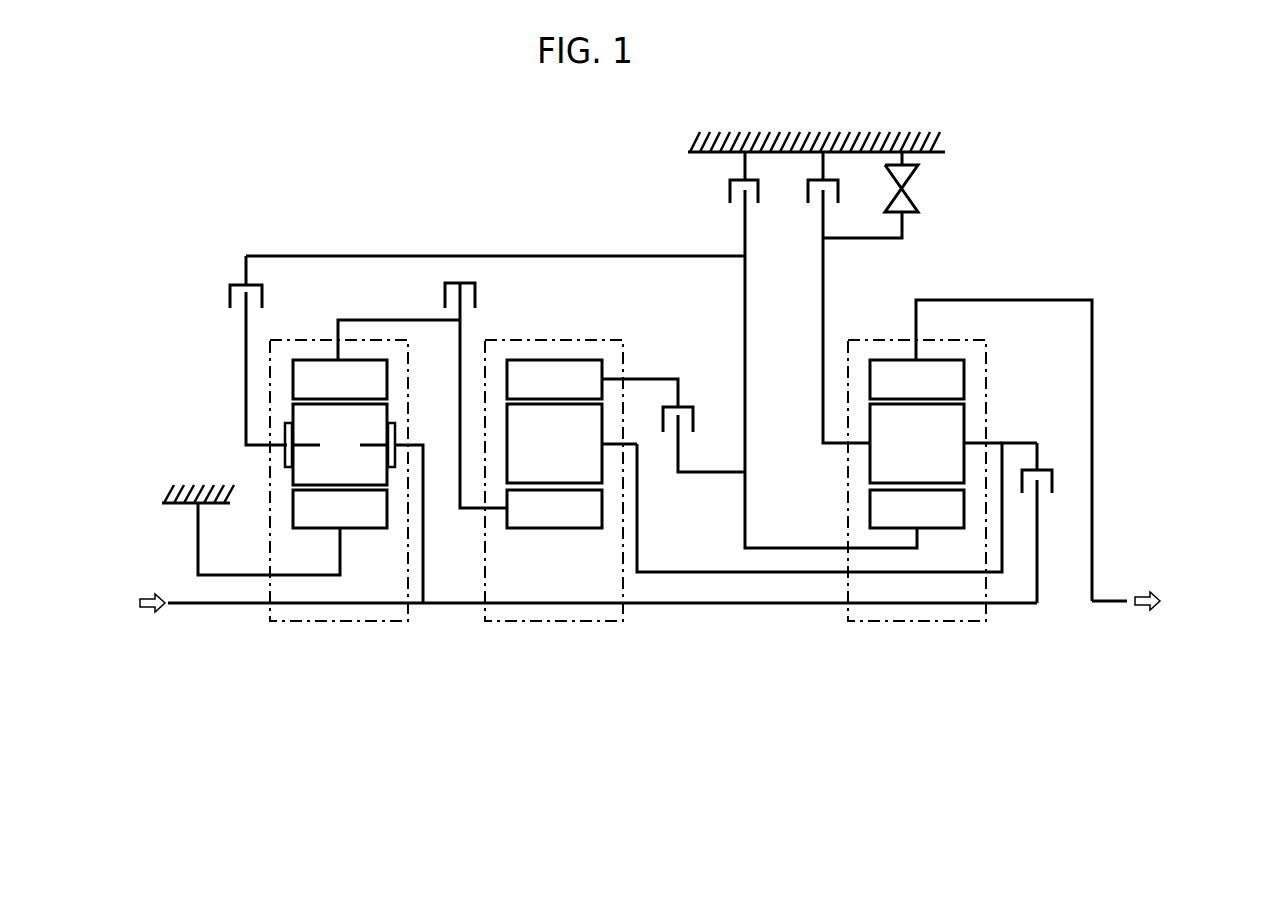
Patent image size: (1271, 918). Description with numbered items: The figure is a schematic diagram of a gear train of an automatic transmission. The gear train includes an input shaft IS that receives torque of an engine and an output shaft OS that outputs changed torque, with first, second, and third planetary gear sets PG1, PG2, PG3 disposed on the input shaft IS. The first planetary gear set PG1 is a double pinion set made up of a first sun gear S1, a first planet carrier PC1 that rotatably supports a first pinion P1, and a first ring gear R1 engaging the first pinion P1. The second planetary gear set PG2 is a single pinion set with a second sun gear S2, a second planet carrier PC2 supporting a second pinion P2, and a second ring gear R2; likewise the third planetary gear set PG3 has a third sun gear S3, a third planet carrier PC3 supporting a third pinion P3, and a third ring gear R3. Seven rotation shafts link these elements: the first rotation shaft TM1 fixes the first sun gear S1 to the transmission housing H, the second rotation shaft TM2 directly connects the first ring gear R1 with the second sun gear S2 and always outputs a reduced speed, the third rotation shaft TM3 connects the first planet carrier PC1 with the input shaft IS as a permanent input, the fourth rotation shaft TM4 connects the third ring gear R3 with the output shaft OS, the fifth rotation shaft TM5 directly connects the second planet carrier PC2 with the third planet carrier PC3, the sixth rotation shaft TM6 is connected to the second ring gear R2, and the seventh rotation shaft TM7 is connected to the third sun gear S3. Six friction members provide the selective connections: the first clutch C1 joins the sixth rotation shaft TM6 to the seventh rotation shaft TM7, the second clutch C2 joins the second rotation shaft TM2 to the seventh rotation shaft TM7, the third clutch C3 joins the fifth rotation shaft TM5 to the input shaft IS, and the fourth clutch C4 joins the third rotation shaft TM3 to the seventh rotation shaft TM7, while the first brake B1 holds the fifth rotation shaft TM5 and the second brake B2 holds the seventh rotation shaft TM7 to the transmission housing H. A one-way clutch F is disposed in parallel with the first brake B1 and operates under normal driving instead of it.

The transmission housing H is at (185, 482).
The first planetary gear set PG1 is at (337, 634).
The second planetary gear set PG2 is at (552, 634).
The third planetary gear set PG3 is at (915, 634).
The first ring gear R1 is at (340, 379).
The first pinion P1 is at (340, 444).
The first sun gear S1 is at (340, 509).
The first planet carrier PC1 is at (262, 445).
The second ring gear R2 is at (554, 379).
The second pinion P2 is at (554, 443).
The second sun gear S2 is at (554, 509).
The second planet carrier PC2 is at (614, 441).
The third ring gear R3 is at (917, 379).
The third pinion P3 is at (917, 443).
The third sun gear S3 is at (917, 509).
The third planet carrier PC3 is at (995, 440).
The input shaft IS is at (190, 607).
The output shaft OS is at (1108, 605).
The first rotation shaft TM1 is at (237, 578).
The second rotation shaft TM2 is at (371, 318).
The third rotation shaft TM3 is at (244, 375).
The fourth rotation shaft TM4 is at (1003, 298).
The fifth rotation shaft TM5 is at (706, 577).
The sixth rotation shaft TM6 is at (655, 378).
The seventh rotation shaft TM7 is at (787, 552).
The first clutch C1 is at (704, 439).
The second clutch C2 is at (447, 298).
The third clutch C3 is at (1051, 523).
The fourth clutch C4 is at (233, 299).
The first brake B1 is at (826, 297).
The second brake B2 is at (730, 179).
The one-way clutch F is at (880, 195).